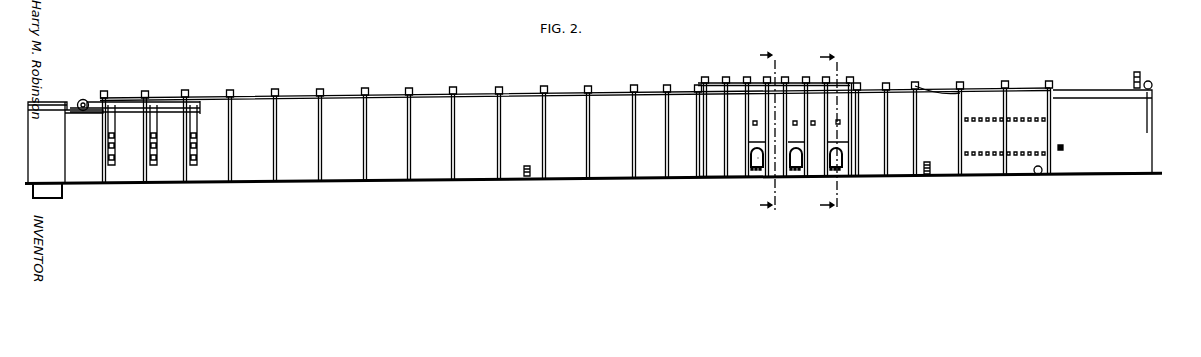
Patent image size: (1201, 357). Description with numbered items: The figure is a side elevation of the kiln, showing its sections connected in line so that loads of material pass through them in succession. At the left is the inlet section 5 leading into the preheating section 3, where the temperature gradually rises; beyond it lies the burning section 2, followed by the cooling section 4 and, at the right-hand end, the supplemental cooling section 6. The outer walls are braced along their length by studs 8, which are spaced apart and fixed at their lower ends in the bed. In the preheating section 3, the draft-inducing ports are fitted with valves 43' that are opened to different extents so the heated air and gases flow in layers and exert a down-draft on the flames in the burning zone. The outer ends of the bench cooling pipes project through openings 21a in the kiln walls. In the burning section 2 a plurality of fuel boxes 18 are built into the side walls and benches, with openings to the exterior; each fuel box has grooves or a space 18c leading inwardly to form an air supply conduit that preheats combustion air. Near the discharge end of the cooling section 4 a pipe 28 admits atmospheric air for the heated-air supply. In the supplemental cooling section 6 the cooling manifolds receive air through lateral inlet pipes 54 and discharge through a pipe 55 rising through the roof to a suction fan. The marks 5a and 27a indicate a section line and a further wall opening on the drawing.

The burning section 2 is at (718, 170).
The preheating section 3 is at (480, 173).
The cooling section 4 is at (948, 167).
The inlet section 5 is at (77, 193).
The section line 5a is at (819, 131).
The supplemental cooling section 6 is at (1090, 116).
The studs 8 is at (319, 139).
The fuel boxes 18 is at (752, 164).
The grooves or space 18c is at (760, 169).
The openings 21a is at (524, 168).
The control box 27a is at (930, 163).
The conduit or pipe 28 is at (1037, 177).
The valves 43' is at (166, 143).
The inlet pipe 54 is at (1063, 150).
The discharge pipe 55 is at (1141, 80).